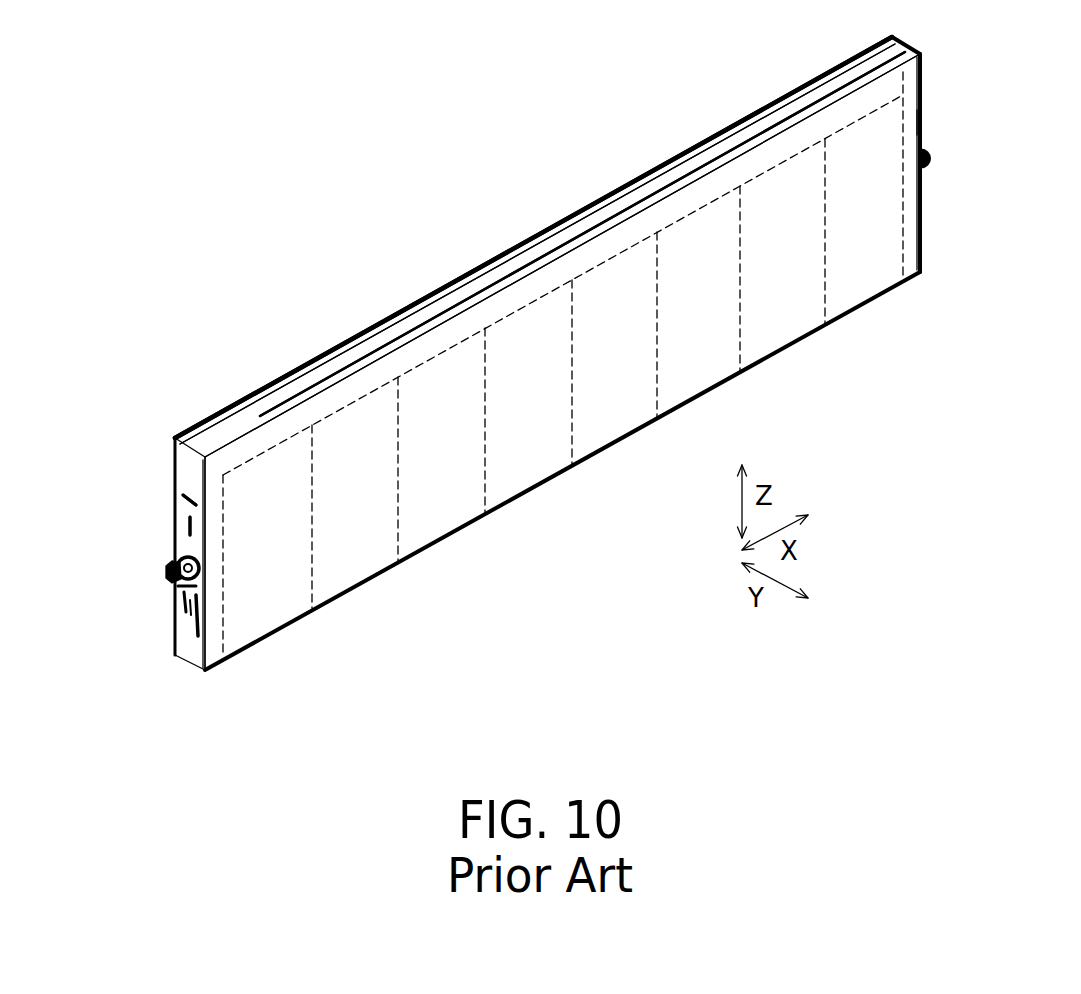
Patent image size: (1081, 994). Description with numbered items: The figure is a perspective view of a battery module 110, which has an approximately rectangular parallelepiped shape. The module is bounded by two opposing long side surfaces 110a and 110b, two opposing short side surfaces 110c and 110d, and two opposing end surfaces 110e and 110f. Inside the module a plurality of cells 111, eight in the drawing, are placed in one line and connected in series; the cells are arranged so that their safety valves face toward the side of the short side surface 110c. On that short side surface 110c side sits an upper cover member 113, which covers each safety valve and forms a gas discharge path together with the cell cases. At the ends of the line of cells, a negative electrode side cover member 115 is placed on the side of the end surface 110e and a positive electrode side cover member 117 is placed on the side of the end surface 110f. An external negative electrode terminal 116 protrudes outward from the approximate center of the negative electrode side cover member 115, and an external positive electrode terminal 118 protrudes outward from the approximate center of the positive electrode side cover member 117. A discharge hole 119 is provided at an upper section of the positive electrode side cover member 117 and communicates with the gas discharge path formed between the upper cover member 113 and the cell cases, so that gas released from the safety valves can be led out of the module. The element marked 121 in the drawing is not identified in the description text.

The battery module 110 is at (573, 370).
The long side surface 110a is at (535, 442).
The long side surface 110b is at (413, 308).
The short side surface 110c is at (675, 177).
The short side surface 110d is at (593, 455).
The end surface 110e is at (192, 643).
The end surface 110f is at (922, 252).
The cell 111 is at (863, 287).
The upper cover member 113 is at (563, 290).
The negative electrode side cover member 115 is at (220, 492).
The external negative electrode terminal 116 is at (176, 556).
The positive electrode side cover member 117 is at (912, 125).
The external positive electrode terminal 118 is at (927, 152).
The discharge hole 119 is at (923, 68).
The cover lid 121 is at (770, 203).